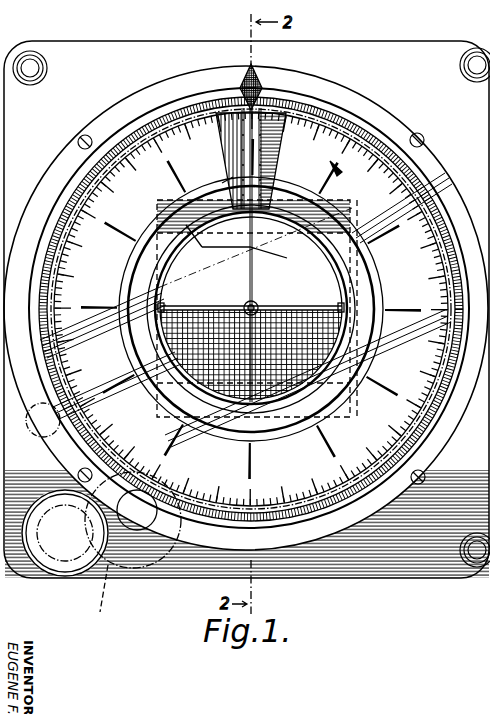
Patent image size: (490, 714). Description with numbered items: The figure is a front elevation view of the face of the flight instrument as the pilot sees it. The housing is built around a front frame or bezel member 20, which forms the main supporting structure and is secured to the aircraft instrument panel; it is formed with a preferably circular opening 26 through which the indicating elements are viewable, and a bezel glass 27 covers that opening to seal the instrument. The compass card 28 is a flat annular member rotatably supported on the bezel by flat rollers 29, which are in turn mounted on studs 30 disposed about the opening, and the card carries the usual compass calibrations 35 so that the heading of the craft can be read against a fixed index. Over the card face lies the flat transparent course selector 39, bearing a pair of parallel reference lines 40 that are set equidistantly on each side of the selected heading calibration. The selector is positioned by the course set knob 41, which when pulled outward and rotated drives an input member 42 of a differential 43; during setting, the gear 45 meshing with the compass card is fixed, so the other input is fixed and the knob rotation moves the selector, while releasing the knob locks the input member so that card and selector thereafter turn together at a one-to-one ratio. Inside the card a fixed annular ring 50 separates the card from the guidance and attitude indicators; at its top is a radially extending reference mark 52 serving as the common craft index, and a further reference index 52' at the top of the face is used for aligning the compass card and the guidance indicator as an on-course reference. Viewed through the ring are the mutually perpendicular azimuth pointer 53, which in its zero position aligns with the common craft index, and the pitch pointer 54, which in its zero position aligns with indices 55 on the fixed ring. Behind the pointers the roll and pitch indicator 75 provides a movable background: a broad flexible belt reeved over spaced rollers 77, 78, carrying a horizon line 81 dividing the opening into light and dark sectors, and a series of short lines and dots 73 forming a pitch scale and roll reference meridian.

The bezel member 20 is at (413, 576).
The circular opening 26 is at (392, 135).
The bezel glass 27 is at (405, 148).
The compass card 28 is at (345, 124).
The flat rollers 29 is at (287, 68).
The studs 30 is at (58, 440).
The compass calibrations 35 is at (428, 176).
The course selector 39 is at (264, 172).
The parallel reference lines 40 is at (240, 160).
The course set knob 41 is at (68, 572).
The input member 42 is at (97, 598).
The differential 43 is at (170, 568).
The gear 45 is at (128, 560).
The annular ring 50 is at (372, 284).
The reference mark 52 is at (213, 174).
The reference index 52' is at (230, 64).
The azimuth pointer 53 is at (262, 298).
The pitch pointer 54 is at (238, 304).
The indices 55 is at (192, 302).
The short lines and dots 73 is at (246, 262).
The roll and pitch indicator 75 is at (136, 352).
The roller 77 is at (344, 176).
The roller 78 is at (222, 432).
The horizon line 81 is at (368, 344).